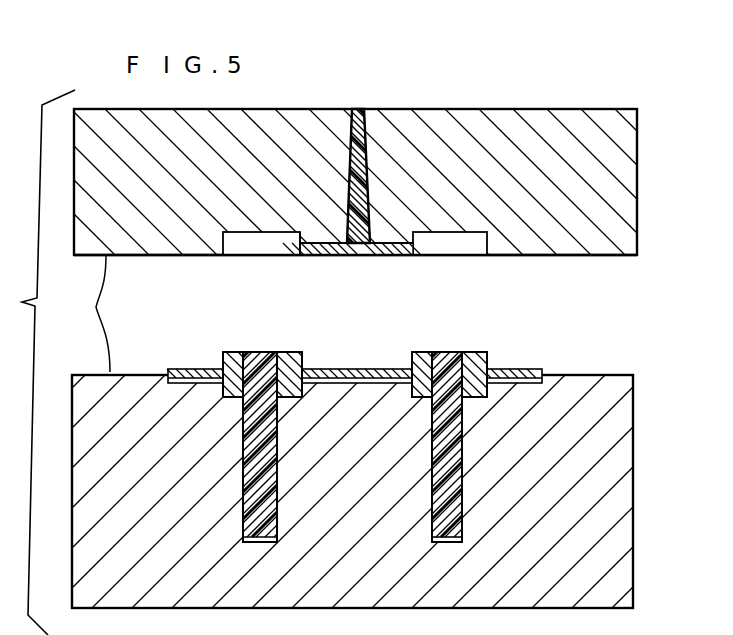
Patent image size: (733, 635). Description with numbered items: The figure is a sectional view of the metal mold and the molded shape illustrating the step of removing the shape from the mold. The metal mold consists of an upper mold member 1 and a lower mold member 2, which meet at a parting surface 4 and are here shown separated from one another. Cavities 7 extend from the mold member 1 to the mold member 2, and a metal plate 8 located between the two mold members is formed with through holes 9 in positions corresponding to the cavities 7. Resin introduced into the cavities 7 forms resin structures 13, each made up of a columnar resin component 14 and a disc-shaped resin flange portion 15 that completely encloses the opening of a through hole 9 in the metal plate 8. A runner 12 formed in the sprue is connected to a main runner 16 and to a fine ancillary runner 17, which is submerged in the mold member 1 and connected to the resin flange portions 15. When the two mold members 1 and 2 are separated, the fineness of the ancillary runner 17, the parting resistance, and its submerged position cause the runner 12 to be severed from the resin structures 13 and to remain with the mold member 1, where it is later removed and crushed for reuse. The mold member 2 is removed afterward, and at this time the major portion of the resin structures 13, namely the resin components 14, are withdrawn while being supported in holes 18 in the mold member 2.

The mold member 1 is at (628, 172).
The mold member 2 is at (617, 456).
The parting surface 4 is at (92, 313).
The cavities 7 is at (252, 240).
The metal plate 8 is at (185, 370).
The through holes 9 is at (440, 378).
The runner 12 is at (356, 244).
The resin structures 13 is at (252, 352).
The resin components 14 is at (268, 470).
The resin flange portions 15 is at (424, 362).
The main runner 16 is at (390, 245).
The ancillary runner 17 is at (305, 245).
The holes 18 is at (462, 541).